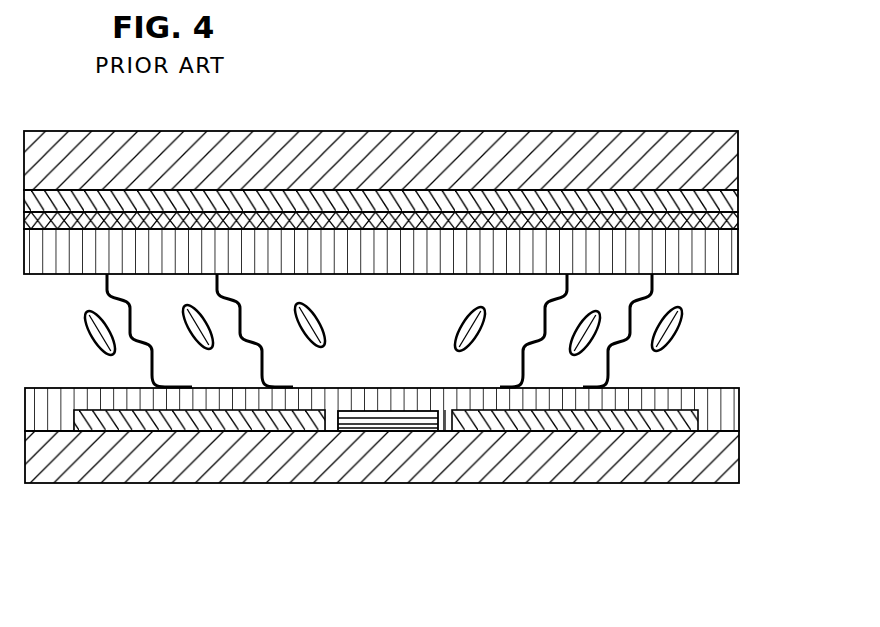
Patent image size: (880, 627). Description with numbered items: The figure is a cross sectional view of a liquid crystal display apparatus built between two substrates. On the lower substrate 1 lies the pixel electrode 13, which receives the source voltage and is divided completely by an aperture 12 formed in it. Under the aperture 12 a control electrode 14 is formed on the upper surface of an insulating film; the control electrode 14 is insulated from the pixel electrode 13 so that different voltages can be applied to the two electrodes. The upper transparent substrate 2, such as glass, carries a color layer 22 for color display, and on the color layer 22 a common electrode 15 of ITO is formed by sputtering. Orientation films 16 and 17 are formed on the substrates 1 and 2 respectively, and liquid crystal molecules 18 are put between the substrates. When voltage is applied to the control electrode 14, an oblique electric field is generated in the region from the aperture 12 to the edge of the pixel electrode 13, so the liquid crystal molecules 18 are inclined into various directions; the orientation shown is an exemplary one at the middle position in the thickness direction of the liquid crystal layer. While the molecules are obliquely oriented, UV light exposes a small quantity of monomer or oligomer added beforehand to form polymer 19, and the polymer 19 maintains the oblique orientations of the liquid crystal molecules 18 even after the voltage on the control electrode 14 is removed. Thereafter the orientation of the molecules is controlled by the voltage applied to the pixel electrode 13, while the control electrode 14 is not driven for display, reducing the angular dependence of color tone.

The substrate 1 is at (740, 460).
The transparent substrate 2 is at (738, 162).
The aperture 12 is at (447, 423).
The pixel electrode 13 is at (175, 425).
The control electrode 14 is at (380, 420).
The common electrode 15 is at (738, 217).
The orientation film 16 is at (740, 405).
The orientation film 17 is at (738, 250).
The liquid crystal molecules 18 is at (677, 320).
The polymer 19 is at (608, 375).
The color layer 22 is at (738, 193).